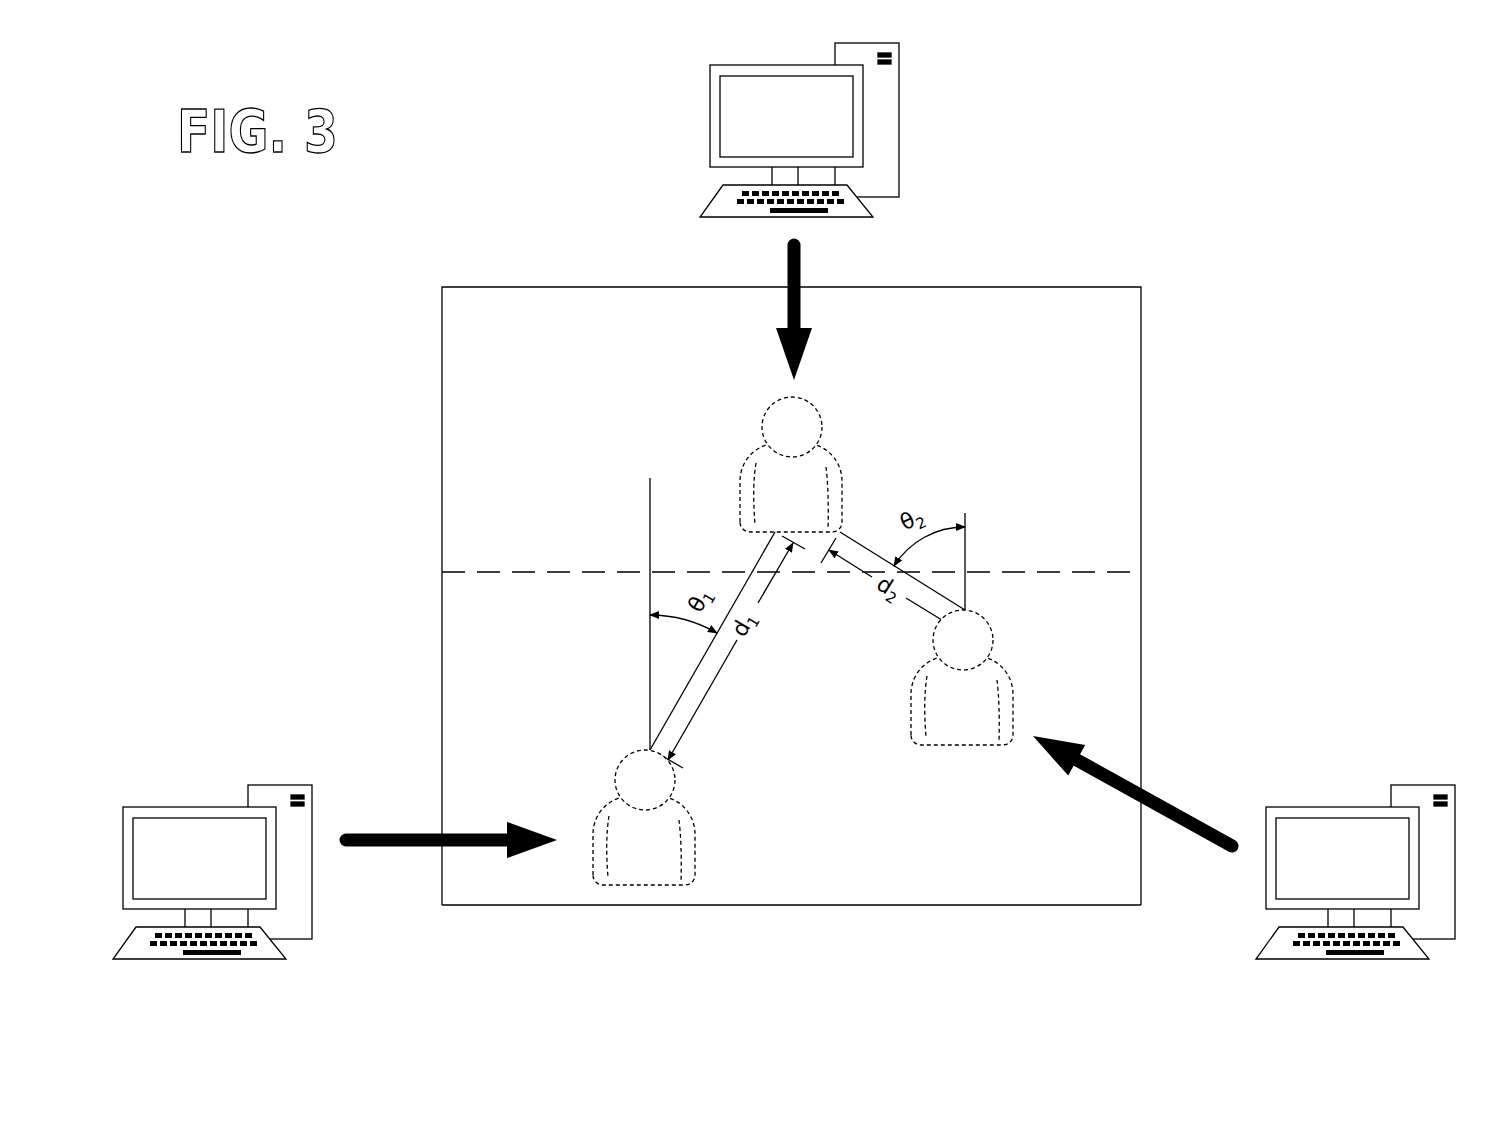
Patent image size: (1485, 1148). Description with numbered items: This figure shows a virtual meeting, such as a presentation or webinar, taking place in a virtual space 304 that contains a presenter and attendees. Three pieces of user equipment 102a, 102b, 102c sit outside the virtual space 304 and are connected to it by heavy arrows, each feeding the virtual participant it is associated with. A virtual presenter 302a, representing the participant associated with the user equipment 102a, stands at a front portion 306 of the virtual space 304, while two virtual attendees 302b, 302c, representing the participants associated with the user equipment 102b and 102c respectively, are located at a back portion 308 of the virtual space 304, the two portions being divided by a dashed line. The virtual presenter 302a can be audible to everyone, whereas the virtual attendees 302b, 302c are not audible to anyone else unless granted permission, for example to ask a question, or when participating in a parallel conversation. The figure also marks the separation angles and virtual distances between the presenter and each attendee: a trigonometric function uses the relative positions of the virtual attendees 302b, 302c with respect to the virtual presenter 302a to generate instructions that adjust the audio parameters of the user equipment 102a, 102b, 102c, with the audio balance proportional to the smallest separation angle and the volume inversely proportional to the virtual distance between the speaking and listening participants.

The user equipment 102a is at (814, 128).
The user equipment 102b is at (1372, 870).
The user equipment 102c is at (229, 870).
The virtual presenter 302a is at (760, 501).
The virtual attendee 302b is at (932, 713).
The virtual attendee 302c is at (614, 854).
The virtual space 304 is at (1212, 428).
The front portion 306 is at (1064, 544).
The back portion 308 is at (1064, 634).